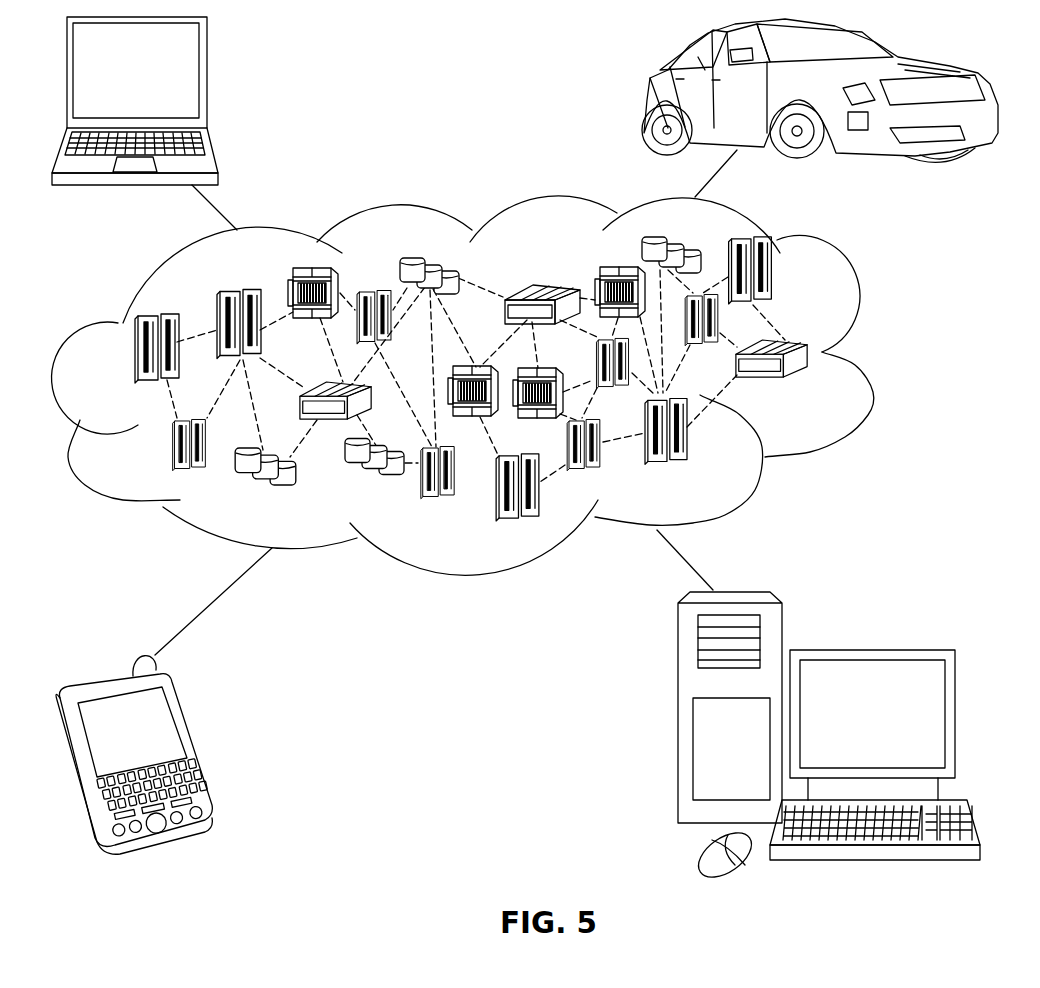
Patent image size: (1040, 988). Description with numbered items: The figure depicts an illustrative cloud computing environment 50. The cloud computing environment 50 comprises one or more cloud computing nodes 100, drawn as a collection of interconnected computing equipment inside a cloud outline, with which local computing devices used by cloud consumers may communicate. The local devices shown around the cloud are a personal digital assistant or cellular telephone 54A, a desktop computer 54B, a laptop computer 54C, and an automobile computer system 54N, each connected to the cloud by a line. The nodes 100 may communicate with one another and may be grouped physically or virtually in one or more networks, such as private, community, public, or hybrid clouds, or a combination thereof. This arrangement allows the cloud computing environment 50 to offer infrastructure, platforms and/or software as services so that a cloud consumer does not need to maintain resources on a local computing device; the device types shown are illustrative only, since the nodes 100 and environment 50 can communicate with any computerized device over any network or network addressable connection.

The cloud computing environment 50 is at (870, 353).
The personal digital assistant (PDA) or cellular telephone 54A is at (200, 746).
The desktop computer 54B is at (870, 650).
The laptop computer 54C is at (205, 80).
The automobile computer system 54N is at (648, 94).
The cloud computing nodes 100 is at (820, 389).